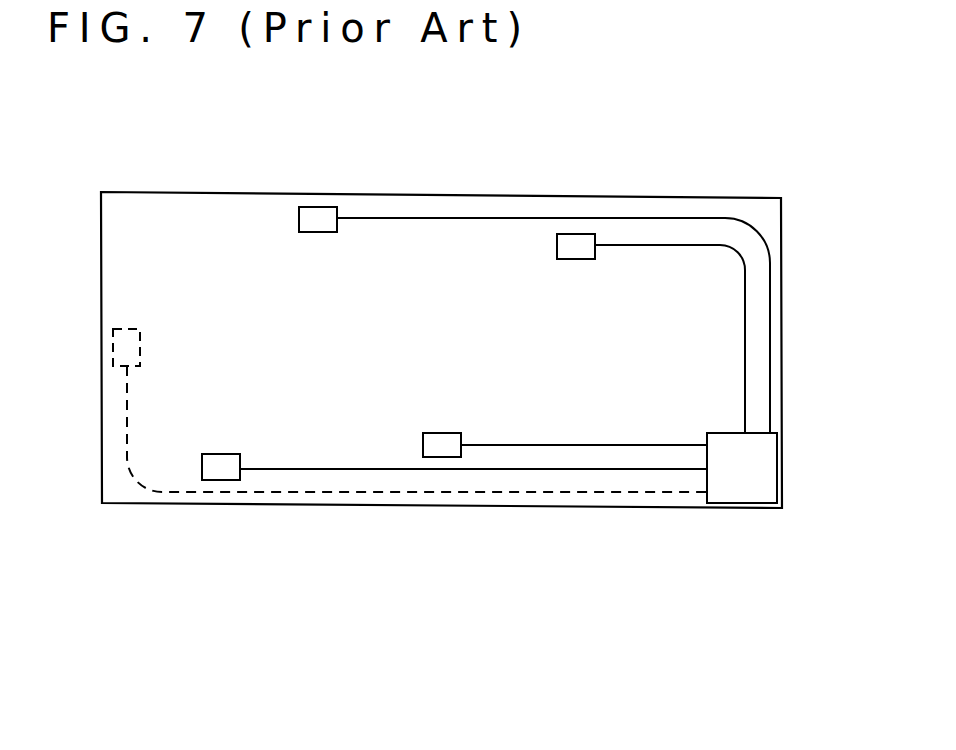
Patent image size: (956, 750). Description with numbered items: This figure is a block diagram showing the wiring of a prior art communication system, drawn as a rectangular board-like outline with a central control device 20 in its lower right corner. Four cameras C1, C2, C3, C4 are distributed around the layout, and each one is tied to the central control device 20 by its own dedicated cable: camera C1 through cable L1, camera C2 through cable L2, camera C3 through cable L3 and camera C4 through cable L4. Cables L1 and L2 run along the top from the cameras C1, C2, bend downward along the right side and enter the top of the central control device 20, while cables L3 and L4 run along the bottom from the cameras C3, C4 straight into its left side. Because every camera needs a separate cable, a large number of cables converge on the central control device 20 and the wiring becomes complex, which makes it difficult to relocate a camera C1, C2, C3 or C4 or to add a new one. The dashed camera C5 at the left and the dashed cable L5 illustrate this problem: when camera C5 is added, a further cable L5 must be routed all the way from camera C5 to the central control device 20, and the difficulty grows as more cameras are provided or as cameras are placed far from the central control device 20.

The central control device 20 is at (770, 477).
The camera C1 is at (312, 213).
The camera C2 is at (574, 238).
The camera C3 is at (442, 452).
The camera C4 is at (221, 473).
The camera C5 is at (118, 348).
The cable L1 is at (436, 218).
The cable L2 is at (681, 245).
The cable L3 is at (538, 445).
The cable L4 is at (317, 469).
The cable L5 is at (126, 425).